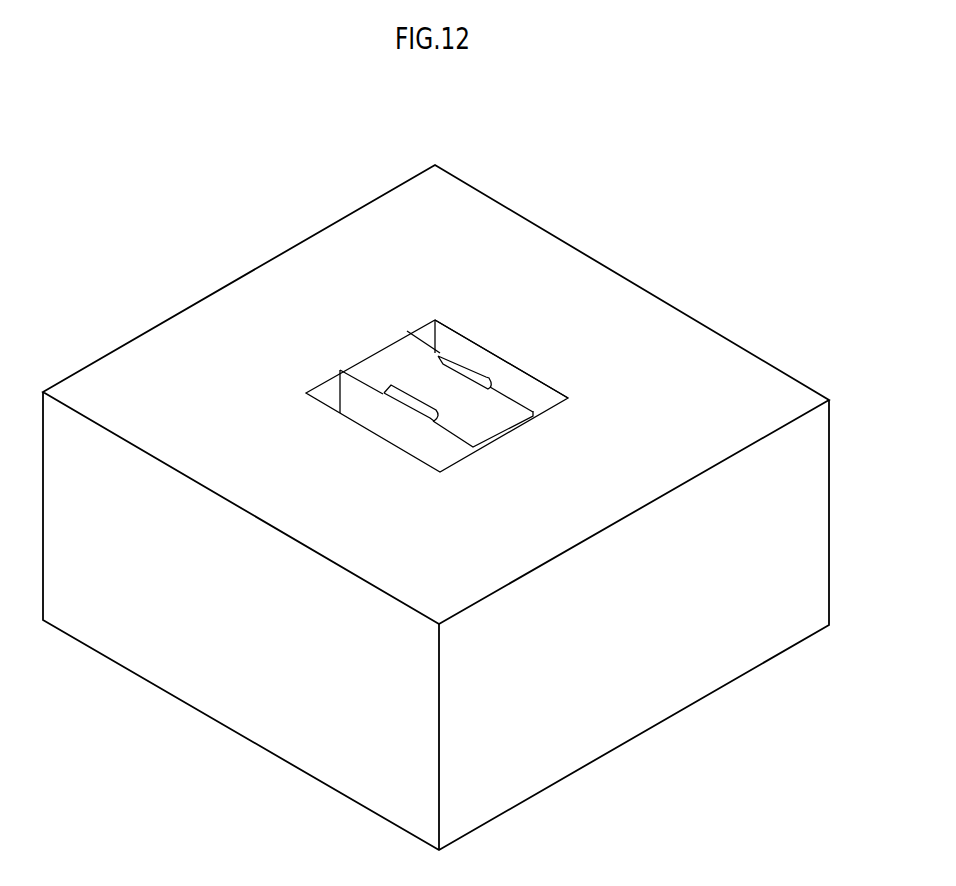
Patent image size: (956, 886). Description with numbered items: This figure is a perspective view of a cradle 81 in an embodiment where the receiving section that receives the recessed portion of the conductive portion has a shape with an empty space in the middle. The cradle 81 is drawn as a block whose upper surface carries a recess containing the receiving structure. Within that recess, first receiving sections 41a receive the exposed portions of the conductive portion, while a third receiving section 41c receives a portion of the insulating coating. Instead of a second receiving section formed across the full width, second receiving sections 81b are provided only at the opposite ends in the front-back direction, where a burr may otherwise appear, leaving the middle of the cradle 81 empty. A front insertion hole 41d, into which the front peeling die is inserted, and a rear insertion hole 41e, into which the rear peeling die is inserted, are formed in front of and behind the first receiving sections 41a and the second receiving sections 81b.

The cradle 81 is at (436, 507).
The second receiving sections 81b is at (505, 405).
The first receiving sections 41a is at (440, 332).
The third receiving section 41c is at (283, 293).
The front insertion hole 41d is at (325, 397).
The rear insertion hole 41e is at (422, 358).